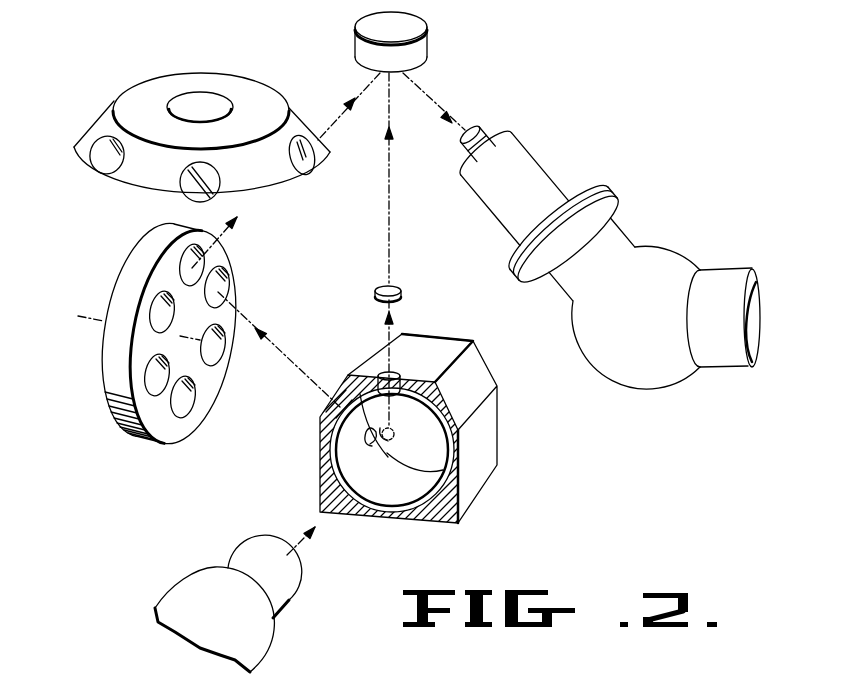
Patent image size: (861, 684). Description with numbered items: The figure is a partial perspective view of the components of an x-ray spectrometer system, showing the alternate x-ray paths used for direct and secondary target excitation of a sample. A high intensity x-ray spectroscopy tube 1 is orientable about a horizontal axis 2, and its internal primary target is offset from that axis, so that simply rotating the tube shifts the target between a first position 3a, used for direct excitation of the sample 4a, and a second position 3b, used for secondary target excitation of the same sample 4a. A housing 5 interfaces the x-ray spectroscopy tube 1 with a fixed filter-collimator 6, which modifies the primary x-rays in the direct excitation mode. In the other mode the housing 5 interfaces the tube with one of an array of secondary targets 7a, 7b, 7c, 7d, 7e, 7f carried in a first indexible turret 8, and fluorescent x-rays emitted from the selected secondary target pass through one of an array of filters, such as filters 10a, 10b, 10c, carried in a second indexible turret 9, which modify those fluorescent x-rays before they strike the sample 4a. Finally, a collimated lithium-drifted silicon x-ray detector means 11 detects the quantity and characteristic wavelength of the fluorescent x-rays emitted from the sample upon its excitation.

The x-ray spectroscopy tube 1 is at (180, 597).
The horizontal axis 2 is at (292, 543).
The primary target position for direct excitation 3a is at (393, 434).
The primary target position for secondary target excitation 3b is at (370, 448).
The sample 4a is at (415, 47).
The housing 5 is at (500, 431).
The filter-collimator 6 is at (397, 283).
The secondary target 7a is at (190, 275).
The secondary target 7b is at (218, 292).
The secondary target 7c is at (214, 357).
The secondary target 7d is at (185, 410).
The secondary target 7e is at (150, 385).
The secondary target 7f is at (157, 315).
The first indexible turret 8 is at (108, 341).
The second indexible turret 9 is at (128, 97).
The filter 10a is at (311, 160).
The filter 10b is at (220, 178).
The filter 10c is at (93, 163).
The x-ray detector means 11 is at (575, 175).